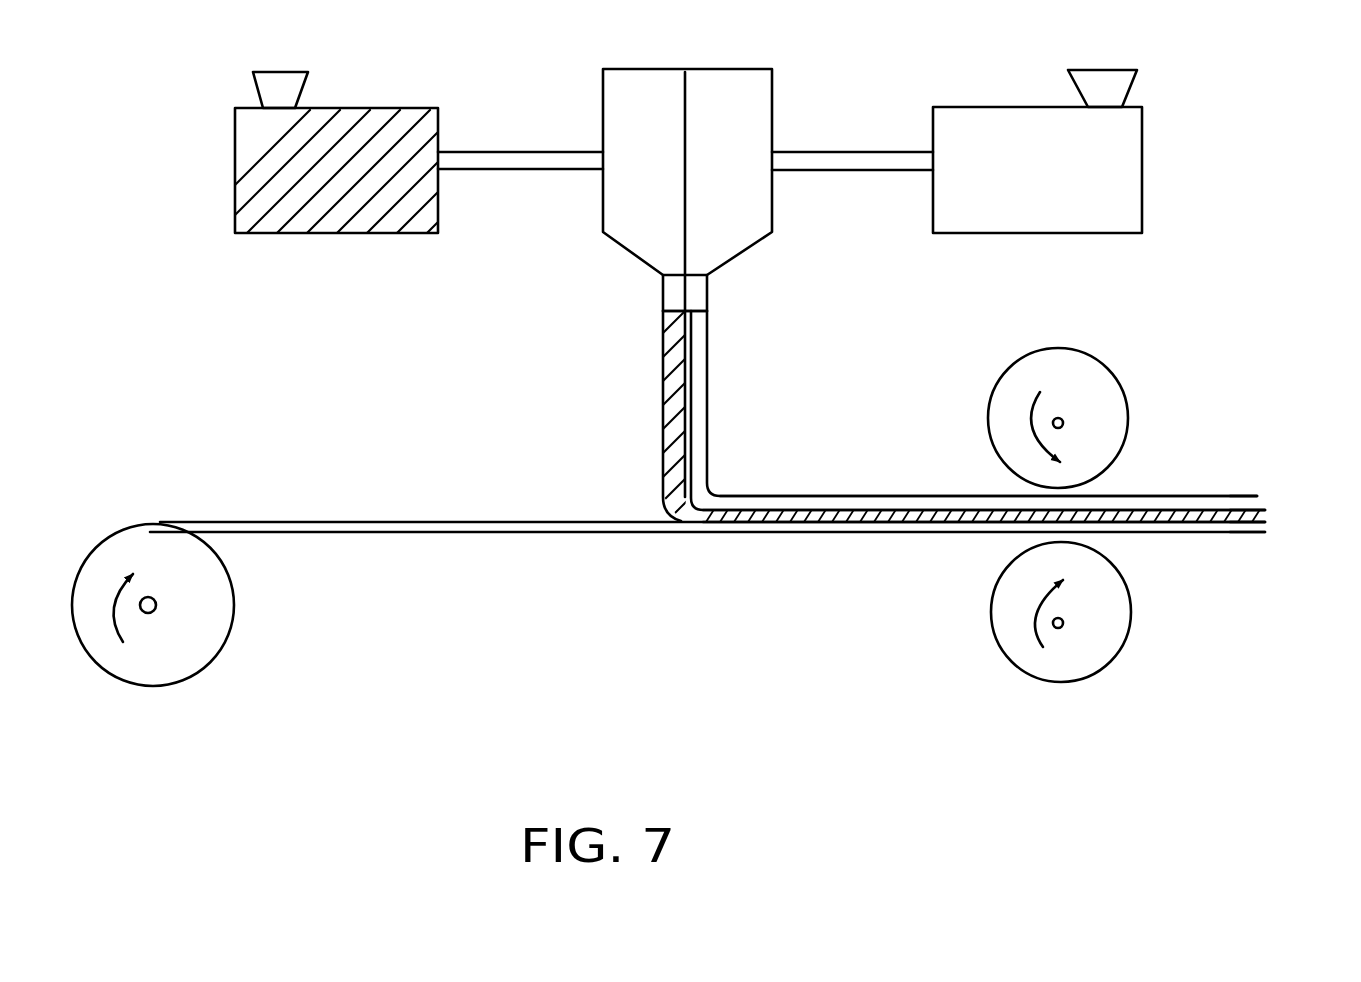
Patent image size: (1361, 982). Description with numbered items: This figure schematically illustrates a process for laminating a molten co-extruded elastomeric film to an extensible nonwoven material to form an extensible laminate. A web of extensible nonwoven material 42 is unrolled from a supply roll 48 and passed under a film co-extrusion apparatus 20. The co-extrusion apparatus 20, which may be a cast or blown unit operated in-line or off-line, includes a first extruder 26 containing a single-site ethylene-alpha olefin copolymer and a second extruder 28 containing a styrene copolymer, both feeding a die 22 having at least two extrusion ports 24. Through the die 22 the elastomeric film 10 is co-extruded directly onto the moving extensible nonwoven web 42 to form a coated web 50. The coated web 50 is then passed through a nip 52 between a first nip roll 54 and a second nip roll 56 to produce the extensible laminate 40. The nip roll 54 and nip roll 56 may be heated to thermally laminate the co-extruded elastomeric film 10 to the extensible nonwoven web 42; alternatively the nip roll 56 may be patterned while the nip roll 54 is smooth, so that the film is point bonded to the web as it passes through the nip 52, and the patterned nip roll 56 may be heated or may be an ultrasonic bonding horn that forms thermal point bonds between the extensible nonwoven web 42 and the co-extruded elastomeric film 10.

The elastomeric film 10 is at (720, 396).
The film co-extrusion apparatus 20 is at (782, 62).
The die 22 is at (715, 278).
The extrusion ports 24 is at (670, 296).
The first extruder 26 is at (1142, 180).
The second extruder 28 is at (238, 222).
The extensible laminate 40 is at (1245, 490).
The extensible nonwoven web 42 is at (288, 522).
The supply roll 48 is at (197, 678).
The coated web 50 is at (804, 485).
The nip 52 is at (993, 539).
The first nip roll 54 is at (1120, 378).
The second nip roll 56 is at (1125, 645).